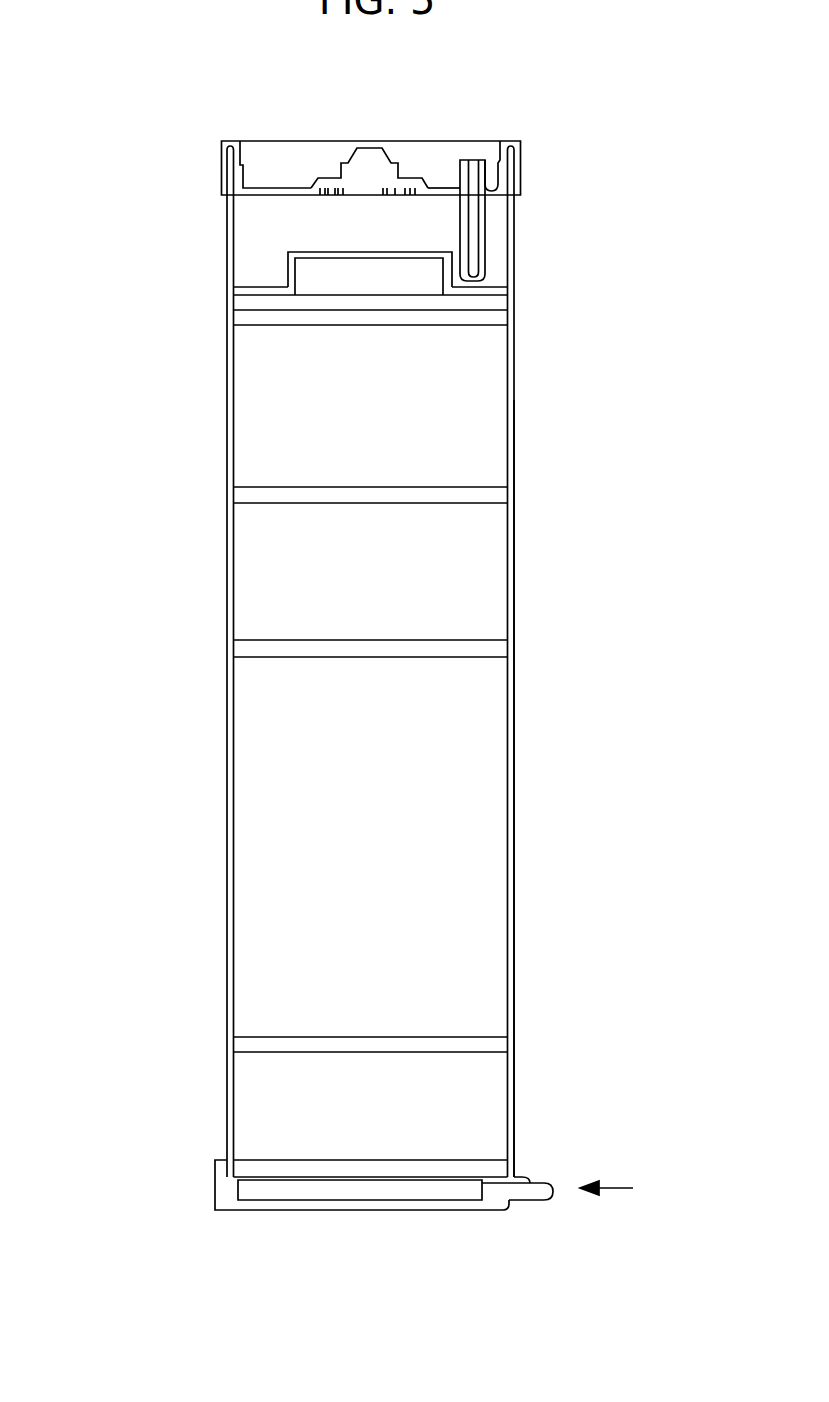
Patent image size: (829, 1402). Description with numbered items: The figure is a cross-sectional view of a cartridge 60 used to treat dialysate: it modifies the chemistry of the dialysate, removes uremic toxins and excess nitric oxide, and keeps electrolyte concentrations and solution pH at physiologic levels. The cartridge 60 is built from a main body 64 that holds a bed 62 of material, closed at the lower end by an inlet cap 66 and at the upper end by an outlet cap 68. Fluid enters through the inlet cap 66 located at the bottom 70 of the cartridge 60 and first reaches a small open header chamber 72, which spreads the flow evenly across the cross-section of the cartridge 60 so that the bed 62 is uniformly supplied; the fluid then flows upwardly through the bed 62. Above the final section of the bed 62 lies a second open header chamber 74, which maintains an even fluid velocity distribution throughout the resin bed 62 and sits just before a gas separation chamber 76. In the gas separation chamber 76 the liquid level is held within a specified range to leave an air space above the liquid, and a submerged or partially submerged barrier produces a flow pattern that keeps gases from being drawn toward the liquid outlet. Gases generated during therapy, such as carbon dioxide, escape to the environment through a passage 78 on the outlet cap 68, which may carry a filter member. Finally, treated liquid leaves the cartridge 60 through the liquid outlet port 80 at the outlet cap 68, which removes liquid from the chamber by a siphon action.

The cartridge 60 is at (531, 566).
The bed 62 is at (456, 445).
The main body 64 is at (514, 852).
The inlet cap 66 is at (492, 1203).
The outlet cap 68 is at (413, 176).
The bottom 70 is at (275, 1211).
The open header chamber 72 is at (363, 1190).
The second open header chamber 74 is at (431, 283).
The gas separation chamber 76 is at (255, 261).
The passage 78 is at (462, 186).
The liquid outlet port 80 is at (370, 150).